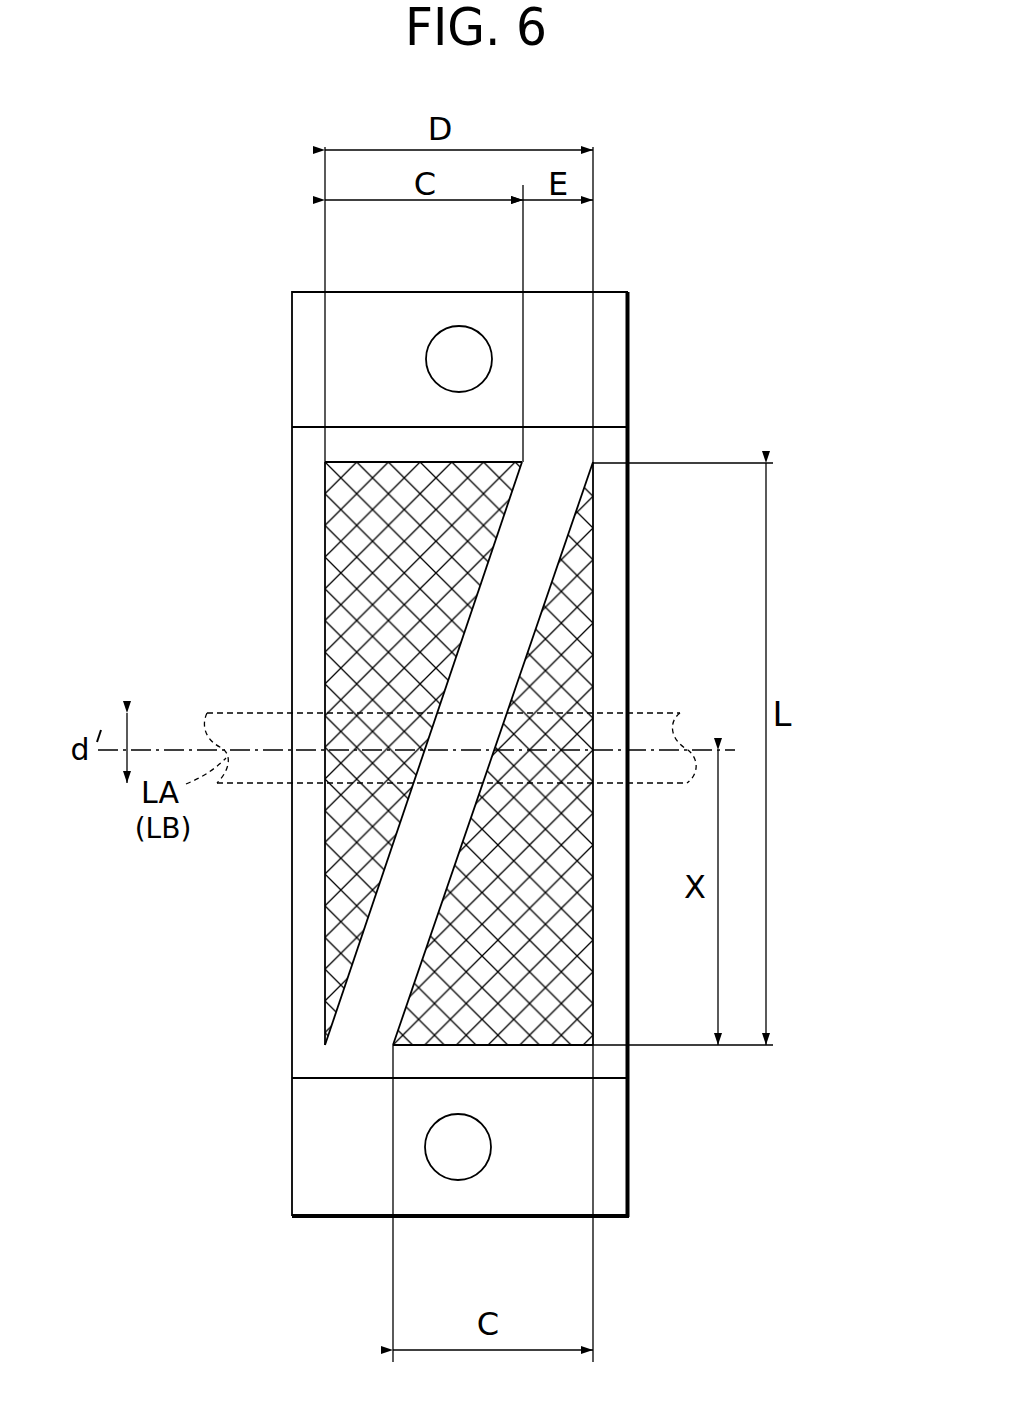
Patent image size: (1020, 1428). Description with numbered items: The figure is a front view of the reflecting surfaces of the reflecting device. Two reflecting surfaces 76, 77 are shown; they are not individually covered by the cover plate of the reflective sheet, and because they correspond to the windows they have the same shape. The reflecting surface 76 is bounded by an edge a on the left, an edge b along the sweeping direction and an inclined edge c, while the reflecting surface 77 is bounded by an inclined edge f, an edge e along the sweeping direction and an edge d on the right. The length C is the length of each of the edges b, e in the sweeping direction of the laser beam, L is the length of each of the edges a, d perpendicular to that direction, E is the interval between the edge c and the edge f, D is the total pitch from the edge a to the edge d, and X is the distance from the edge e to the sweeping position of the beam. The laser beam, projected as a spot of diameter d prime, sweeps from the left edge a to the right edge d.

The reflecting surface 76 is at (379, 712).
The reflecting surface 77 is at (543, 799).
The edge a is at (325, 521).
The edge b is at (374, 462).
The edge c is at (509, 504).
The edge d is at (593, 597).
The edge e is at (537, 1045).
The edge f is at (456, 866).